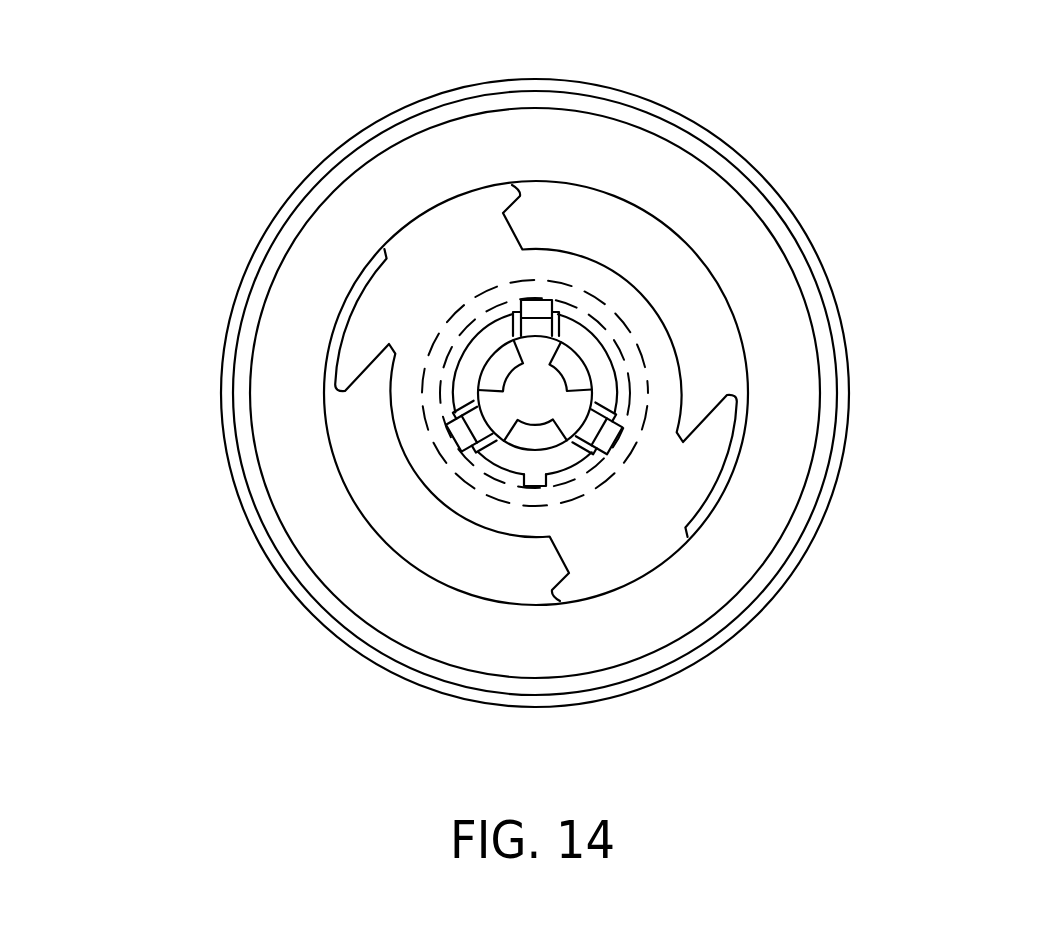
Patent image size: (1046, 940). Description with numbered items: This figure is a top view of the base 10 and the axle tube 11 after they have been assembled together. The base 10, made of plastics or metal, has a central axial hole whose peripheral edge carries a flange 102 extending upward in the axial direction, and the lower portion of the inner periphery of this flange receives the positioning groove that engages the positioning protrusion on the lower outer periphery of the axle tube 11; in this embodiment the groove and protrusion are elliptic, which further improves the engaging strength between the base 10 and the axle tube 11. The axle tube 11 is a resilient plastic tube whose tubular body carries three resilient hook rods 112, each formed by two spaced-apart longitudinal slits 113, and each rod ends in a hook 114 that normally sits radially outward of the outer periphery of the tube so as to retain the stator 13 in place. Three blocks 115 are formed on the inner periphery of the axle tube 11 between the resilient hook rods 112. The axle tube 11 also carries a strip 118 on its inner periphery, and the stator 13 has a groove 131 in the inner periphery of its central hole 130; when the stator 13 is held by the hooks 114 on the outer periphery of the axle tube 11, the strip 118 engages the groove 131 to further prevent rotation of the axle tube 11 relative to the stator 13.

The base 10 is at (758, 512).
The axle tube 11 is at (603, 368).
The stator 13 is at (707, 447).
The flange 102 is at (478, 473).
The resilient hook rod 112 is at (558, 323).
The longitudinal slit 113 is at (561, 328).
The hook 114 is at (533, 307).
The block 115 is at (505, 378).
The strip 118 is at (553, 620).
The central hole 130 is at (610, 380).
The groove 131 is at (537, 473).